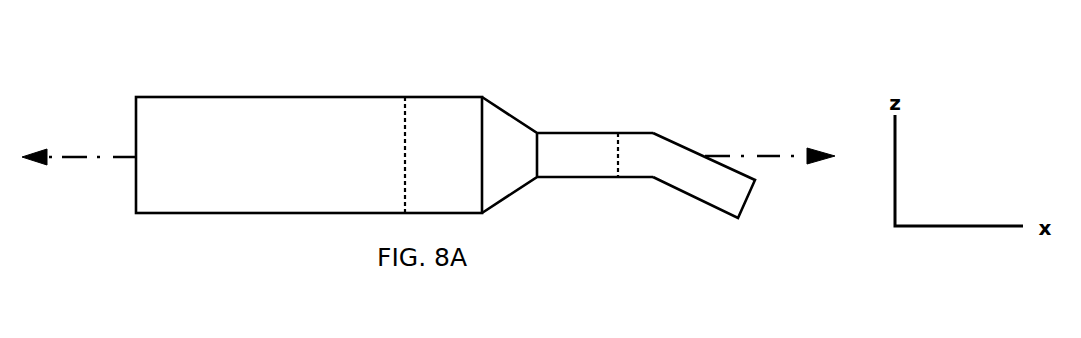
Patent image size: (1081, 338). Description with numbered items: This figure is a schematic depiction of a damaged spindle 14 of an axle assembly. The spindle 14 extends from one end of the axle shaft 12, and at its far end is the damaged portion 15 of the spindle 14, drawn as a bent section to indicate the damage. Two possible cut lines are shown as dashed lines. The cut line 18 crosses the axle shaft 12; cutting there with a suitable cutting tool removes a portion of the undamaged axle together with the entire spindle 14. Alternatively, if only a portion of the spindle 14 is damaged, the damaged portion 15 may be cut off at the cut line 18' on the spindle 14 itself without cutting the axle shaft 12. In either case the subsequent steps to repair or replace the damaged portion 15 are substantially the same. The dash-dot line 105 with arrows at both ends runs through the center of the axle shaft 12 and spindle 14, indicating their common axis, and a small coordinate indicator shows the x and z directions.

The axle shaft 12 is at (288, 122).
The cut line 18 is at (367, 127).
The spindle 14 is at (568, 150).
The cut line 18' is at (577, 111).
The damaged portion 15 is at (728, 180).
The longitudinal axis 105 is at (78, 157).